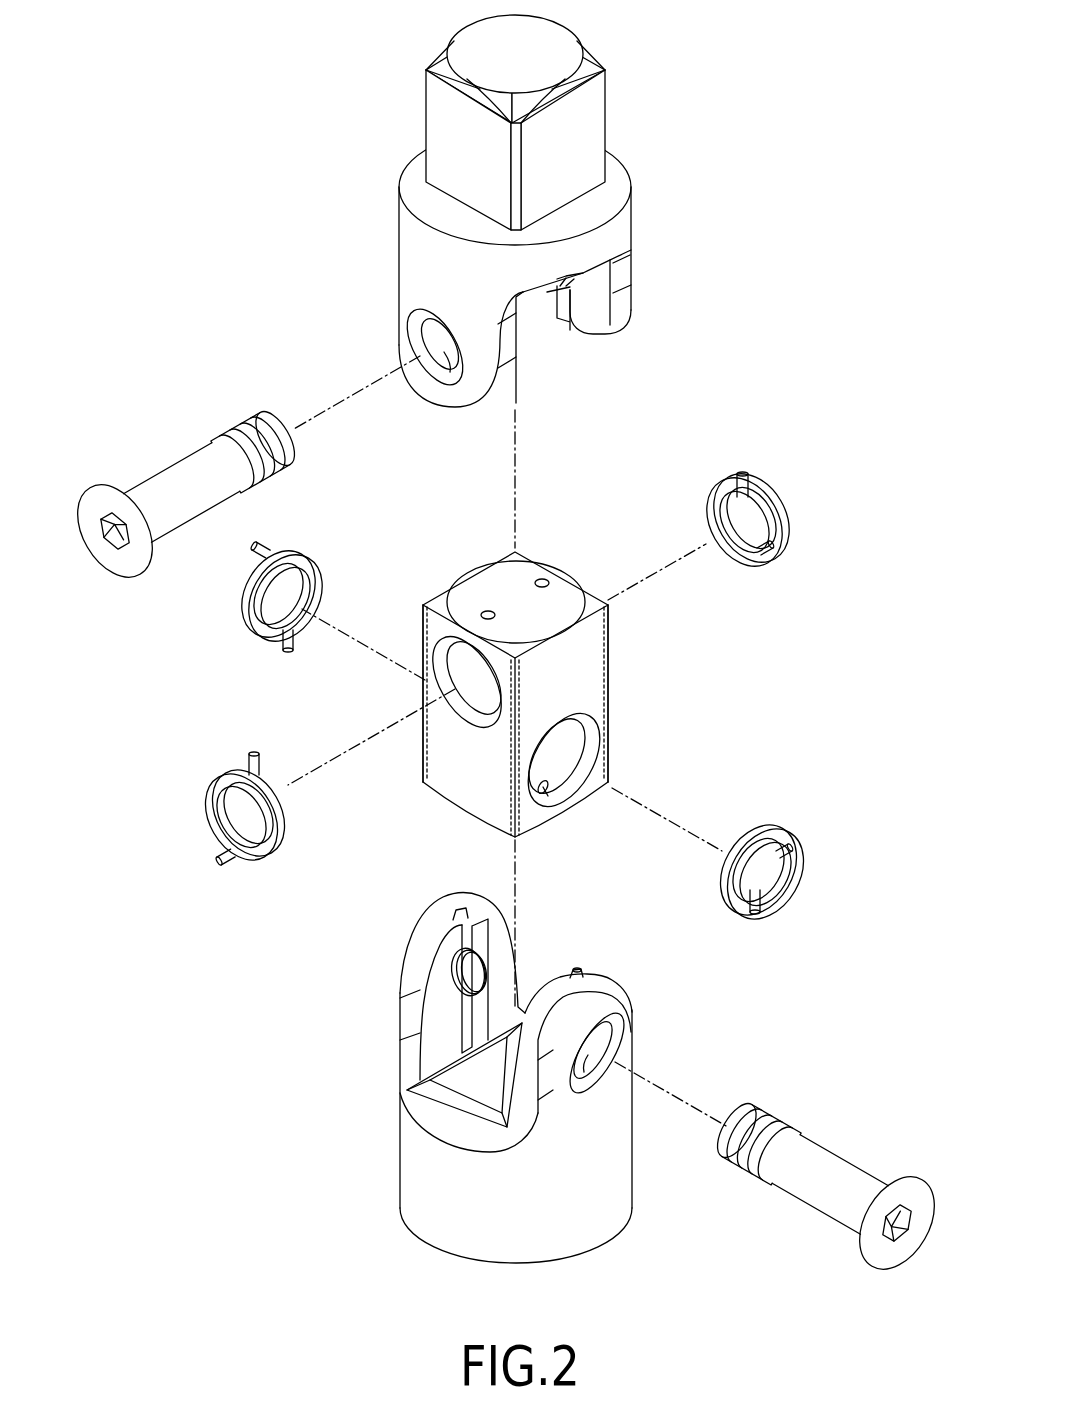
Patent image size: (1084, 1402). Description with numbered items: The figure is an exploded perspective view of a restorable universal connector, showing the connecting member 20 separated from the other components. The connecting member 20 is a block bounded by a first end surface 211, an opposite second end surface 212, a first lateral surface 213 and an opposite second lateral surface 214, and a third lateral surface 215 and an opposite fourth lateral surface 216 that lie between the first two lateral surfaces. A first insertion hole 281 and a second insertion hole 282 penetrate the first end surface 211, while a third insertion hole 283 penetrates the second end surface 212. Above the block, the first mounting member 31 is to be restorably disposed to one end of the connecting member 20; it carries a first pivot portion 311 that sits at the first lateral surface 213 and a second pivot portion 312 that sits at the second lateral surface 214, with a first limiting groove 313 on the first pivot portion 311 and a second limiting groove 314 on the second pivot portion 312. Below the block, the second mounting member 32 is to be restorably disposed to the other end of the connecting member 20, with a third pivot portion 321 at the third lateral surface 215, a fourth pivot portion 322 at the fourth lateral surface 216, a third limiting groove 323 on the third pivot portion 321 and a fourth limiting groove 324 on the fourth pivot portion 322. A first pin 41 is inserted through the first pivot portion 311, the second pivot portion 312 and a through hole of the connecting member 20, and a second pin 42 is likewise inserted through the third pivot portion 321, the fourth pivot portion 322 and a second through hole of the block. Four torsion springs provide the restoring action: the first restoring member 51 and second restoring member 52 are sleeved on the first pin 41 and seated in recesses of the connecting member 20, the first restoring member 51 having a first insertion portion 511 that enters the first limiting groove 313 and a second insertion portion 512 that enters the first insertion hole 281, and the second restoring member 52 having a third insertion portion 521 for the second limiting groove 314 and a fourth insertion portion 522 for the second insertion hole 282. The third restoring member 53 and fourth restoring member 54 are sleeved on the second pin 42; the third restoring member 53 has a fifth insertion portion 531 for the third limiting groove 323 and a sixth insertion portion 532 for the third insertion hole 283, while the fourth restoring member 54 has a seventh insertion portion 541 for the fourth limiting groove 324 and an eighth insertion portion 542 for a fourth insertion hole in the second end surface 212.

The connecting member 20 is at (514, 696).
The first end surface 211 is at (523, 572).
The second end surface 212 is at (540, 822).
The first lateral surface 213 is at (440, 745).
The second lateral surface 214 is at (610, 648).
The third lateral surface 215 is at (583, 683).
The fourth lateral surface 216 is at (433, 599).
The first insertion hole 281 is at (487, 611).
The second insertion hole 282 is at (548, 581).
The third insertion hole 283 is at (550, 792).
The first mounting member 31 is at (646, 144).
The first pivot portion 311 is at (405, 288).
The second pivot portion 312 is at (630, 282).
The first limiting groove 313 is at (440, 354).
The second limiting groove 314 is at (537, 294).
The second mounting member 32 is at (513, 1067).
The third pivot portion 321 is at (620, 1005).
The fourth pivot portion 322 is at (412, 962).
The third limiting groove 323 is at (580, 973).
The fourth limiting groove 324 is at (456, 912).
The first pin 41 is at (152, 462).
The second pin 42 is at (840, 1132).
The first restoring member 51 is at (207, 801).
The first insertion portion 511 is at (219, 860).
The second insertion portion 512 is at (250, 758).
The second restoring member 52 is at (766, 534).
The third insertion portion 521 is at (762, 556).
The fourth insertion portion 522 is at (738, 478).
The third restoring member 53 is at (794, 861).
The fifth insertion portion 531 is at (790, 853).
The sixth insertion portion 532 is at (757, 912).
The fourth restoring member 54 is at (247, 589).
The seventh insertion portion 541 is at (266, 544).
The eighth insertion portion 542 is at (284, 650).